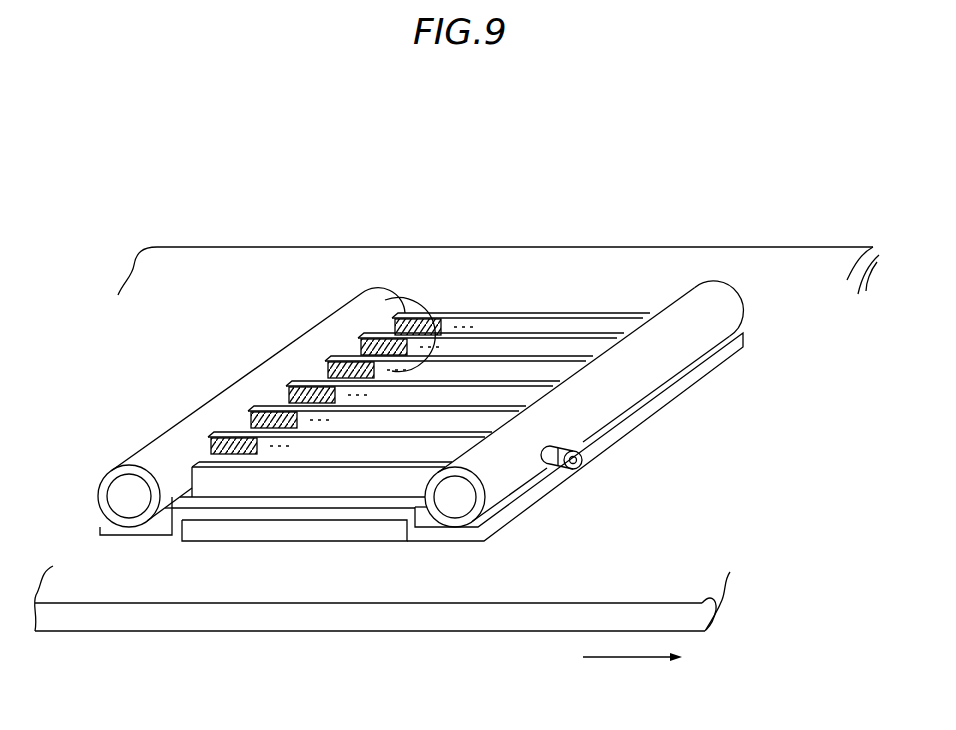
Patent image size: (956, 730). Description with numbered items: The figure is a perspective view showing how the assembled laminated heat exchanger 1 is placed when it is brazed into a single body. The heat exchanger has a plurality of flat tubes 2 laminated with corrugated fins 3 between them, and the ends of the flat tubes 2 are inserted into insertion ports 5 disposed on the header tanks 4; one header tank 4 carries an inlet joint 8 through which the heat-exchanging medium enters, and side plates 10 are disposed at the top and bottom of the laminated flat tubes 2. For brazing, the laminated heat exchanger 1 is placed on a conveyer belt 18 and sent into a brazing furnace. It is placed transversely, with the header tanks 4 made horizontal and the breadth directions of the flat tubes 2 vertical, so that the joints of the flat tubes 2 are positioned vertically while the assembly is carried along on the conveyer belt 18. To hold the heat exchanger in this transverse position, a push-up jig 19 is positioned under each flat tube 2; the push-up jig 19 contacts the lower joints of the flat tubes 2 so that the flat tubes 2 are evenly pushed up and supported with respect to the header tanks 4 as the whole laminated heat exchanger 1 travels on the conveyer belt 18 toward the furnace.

The laminated heat exchanger 1 is at (504, 285).
The flat tubes 2 is at (285, 394).
The corrugated fins 3 is at (438, 336).
The header tanks 4 is at (160, 466).
The insertion ports 5 is at (358, 334).
The inlet joint 8 is at (558, 472).
The side plates 10 is at (553, 316).
The conveyer belt 18 is at (488, 618).
The push-up jig 19 is at (372, 513).